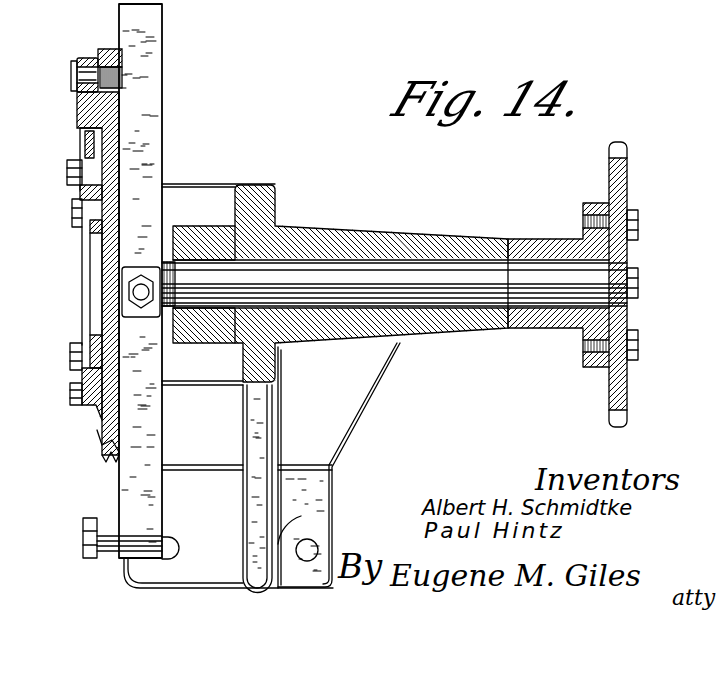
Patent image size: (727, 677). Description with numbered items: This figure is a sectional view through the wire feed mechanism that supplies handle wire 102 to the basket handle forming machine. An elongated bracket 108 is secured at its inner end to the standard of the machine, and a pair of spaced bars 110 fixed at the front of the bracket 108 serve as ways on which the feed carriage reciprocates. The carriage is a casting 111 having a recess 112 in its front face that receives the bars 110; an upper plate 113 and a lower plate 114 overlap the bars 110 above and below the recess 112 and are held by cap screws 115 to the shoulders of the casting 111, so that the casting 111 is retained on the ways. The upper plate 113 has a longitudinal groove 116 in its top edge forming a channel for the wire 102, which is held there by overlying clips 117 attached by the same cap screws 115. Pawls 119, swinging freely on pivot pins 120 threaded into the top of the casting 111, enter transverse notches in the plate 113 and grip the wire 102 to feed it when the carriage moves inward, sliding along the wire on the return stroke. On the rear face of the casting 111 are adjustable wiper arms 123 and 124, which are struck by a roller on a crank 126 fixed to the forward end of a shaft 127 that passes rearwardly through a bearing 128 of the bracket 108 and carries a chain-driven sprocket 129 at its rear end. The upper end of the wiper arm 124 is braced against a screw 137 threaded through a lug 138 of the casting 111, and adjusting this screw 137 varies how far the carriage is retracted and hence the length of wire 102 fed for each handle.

The handle wire 102 is at (78, 110).
The elongated bracket 108 is at (339, 465).
The spaced bars 110 is at (82, 231).
The casting 111 is at (100, 446).
The recess 112 is at (104, 258).
The upper plate 113 is at (79, 193).
The lower plate 114 is at (84, 412).
The cap screws 115 is at (67, 172).
The longitudinal groove 116 is at (85, 146).
The clips 117 is at (84, 140).
The pawls 119 is at (90, 52).
The pivot pins 120 is at (71, 73).
The wiper arm 123 is at (152, 106).
The wiper arm 124 is at (160, 445).
The crank 126 is at (203, 228).
The shaft 127 is at (400, 284).
The bearing 128 is at (472, 234).
The sprocket 129 is at (630, 182).
The screw 137 is at (140, 301).
The lug 138 is at (138, 268).